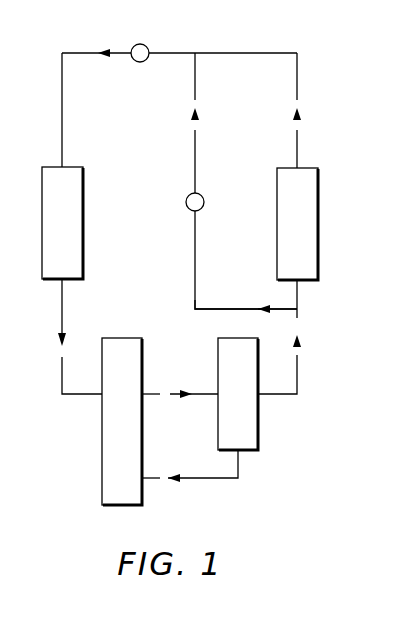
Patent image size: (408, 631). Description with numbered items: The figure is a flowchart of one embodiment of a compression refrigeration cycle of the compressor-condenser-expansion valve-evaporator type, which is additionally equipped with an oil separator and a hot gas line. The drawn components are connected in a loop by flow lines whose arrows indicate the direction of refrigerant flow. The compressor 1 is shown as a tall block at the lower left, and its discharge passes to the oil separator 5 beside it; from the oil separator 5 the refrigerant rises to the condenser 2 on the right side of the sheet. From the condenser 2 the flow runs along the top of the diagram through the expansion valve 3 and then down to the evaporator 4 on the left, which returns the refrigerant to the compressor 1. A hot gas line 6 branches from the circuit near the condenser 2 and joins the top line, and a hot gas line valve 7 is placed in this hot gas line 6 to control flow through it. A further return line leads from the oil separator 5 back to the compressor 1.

The compressor 1 is at (122, 421).
The condenser 2 is at (297, 224).
The expansion valve 3 is at (140, 34).
The evaporator 4 is at (62, 223).
The oil separator 5 is at (238, 394).
The hot gas line 6 is at (246, 284).
The hot gas line valve 7 is at (179, 203).